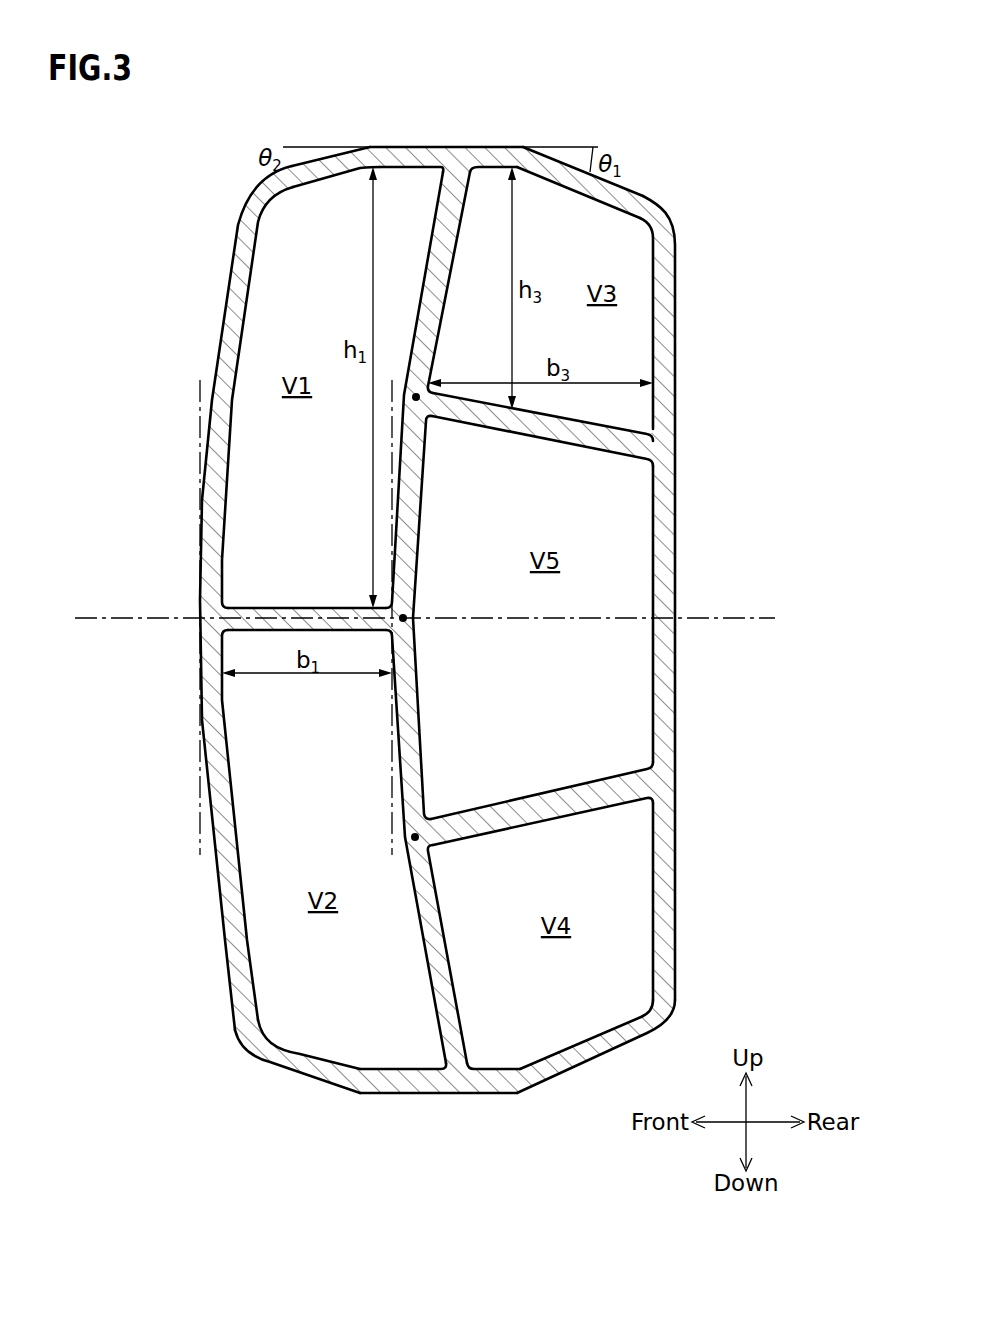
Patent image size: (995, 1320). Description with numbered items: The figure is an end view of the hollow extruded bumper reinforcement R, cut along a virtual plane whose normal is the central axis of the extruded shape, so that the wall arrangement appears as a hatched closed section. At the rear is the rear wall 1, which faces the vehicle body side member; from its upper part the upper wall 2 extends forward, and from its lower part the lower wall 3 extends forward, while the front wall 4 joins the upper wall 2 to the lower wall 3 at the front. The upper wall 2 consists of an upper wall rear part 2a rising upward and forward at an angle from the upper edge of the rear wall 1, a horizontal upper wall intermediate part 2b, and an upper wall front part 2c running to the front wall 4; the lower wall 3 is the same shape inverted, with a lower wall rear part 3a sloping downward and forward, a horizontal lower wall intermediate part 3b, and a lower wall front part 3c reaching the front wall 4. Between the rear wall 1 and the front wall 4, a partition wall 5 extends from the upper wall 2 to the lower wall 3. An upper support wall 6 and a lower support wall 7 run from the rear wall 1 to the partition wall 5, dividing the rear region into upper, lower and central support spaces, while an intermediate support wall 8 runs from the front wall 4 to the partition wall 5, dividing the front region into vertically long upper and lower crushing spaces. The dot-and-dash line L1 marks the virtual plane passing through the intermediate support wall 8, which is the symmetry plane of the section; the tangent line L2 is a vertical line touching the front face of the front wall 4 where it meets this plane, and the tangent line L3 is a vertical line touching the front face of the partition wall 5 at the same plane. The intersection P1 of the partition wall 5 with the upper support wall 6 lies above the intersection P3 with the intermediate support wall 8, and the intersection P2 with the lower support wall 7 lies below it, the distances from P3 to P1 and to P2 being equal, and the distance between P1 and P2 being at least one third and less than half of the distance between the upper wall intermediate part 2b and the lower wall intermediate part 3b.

The bumper reinforcement R is at (207, 228).
The rear wall 1 is at (676, 521).
The upper wall 2 is at (467, 133).
The upper wall rear part 2a is at (580, 154).
The upper wall intermediate part 2b is at (447, 147).
The upper wall front part 2c is at (332, 152).
The lower wall 3 is at (455, 1096).
The lower wall rear part 3a is at (559, 1082).
The lower wall intermediate part 3b is at (447, 1094).
The lower wall front part 3c is at (297, 1085).
The front wall 4 is at (206, 448).
The partition wall 5 is at (416, 566).
The upper support wall 6 is at (556, 410).
The lower support wall 7 is at (528, 800).
The intermediate support wall 8 is at (287, 606).
The intersection of the partition wall with the upper support wall P1 is at (430, 415).
The intersection of the partition wall with the lower support wall P2 is at (428, 826).
The intersection of the partition wall with the intermediate support wall P3 is at (411, 626).
The virtual plane L1 is at (132, 607).
The tangent line L2 is at (198, 796).
The tangent line L3 is at (392, 797).